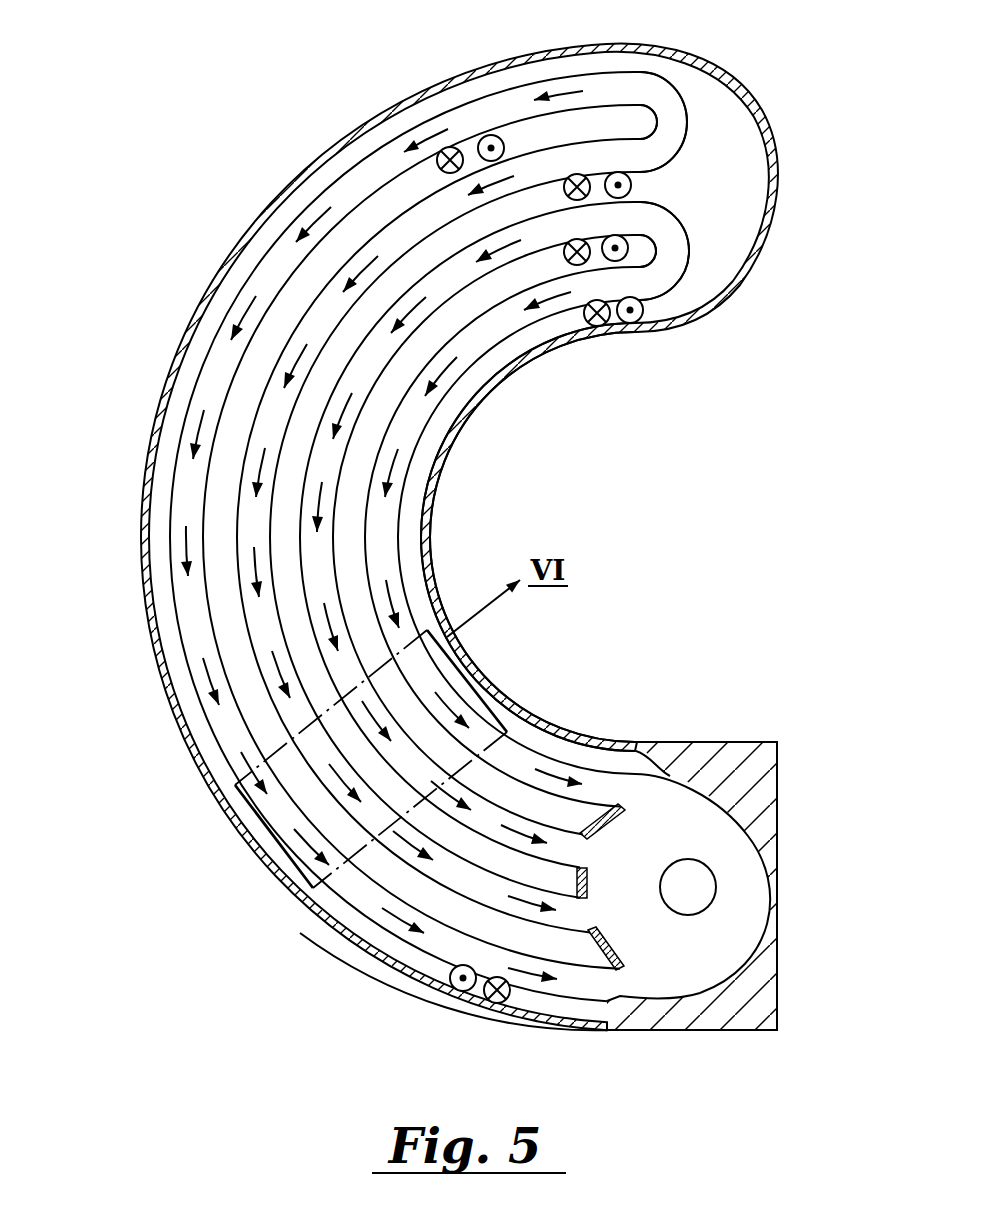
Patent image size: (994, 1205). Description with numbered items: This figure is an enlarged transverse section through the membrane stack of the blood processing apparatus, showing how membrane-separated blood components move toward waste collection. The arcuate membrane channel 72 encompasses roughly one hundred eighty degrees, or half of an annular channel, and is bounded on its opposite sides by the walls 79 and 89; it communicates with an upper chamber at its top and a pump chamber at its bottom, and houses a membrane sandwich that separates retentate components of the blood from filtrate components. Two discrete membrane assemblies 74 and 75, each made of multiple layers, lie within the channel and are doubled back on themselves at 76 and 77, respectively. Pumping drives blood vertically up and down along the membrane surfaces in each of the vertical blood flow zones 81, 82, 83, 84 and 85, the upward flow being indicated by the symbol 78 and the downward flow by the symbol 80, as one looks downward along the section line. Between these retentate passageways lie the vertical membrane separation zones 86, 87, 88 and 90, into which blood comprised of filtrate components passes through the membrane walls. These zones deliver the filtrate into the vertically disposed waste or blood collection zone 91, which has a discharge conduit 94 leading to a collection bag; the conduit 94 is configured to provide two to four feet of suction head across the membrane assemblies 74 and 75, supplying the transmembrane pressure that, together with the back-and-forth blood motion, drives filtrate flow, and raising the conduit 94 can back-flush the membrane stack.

The membrane channel 72 is at (593, 737).
The membrane assembly 74 is at (672, 207).
The membrane assembly 75 is at (667, 107).
The doubled-back portion of membrane assembly 76 is at (673, 250).
The doubled-back portion of membrane assembly 77 is at (690, 130).
The upward blood flow symbol 78 is at (490, 136).
The channel wall 79 is at (437, 514).
The downward blood flow symbol 80 is at (444, 150).
The vertical blood flow zone 81 is at (482, 377).
The vertical blood flow zone 82 is at (412, 392).
The vertical blood flow zone 83 is at (437, 240).
The vertical blood flow zone 84 is at (307, 280).
The vertical blood flow zone 85 is at (203, 337).
The vertical membrane separation zone 86 is at (621, 778).
The vertical membrane separation zone 87 is at (497, 815).
The vertical membrane separation zone 88 is at (351, 933).
The channel wall 89 is at (147, 485).
The vertical membrane separation zone 90 is at (588, 983).
The waste or blood collection zone 91 is at (727, 840).
The discharge conduit 94 is at (712, 900).